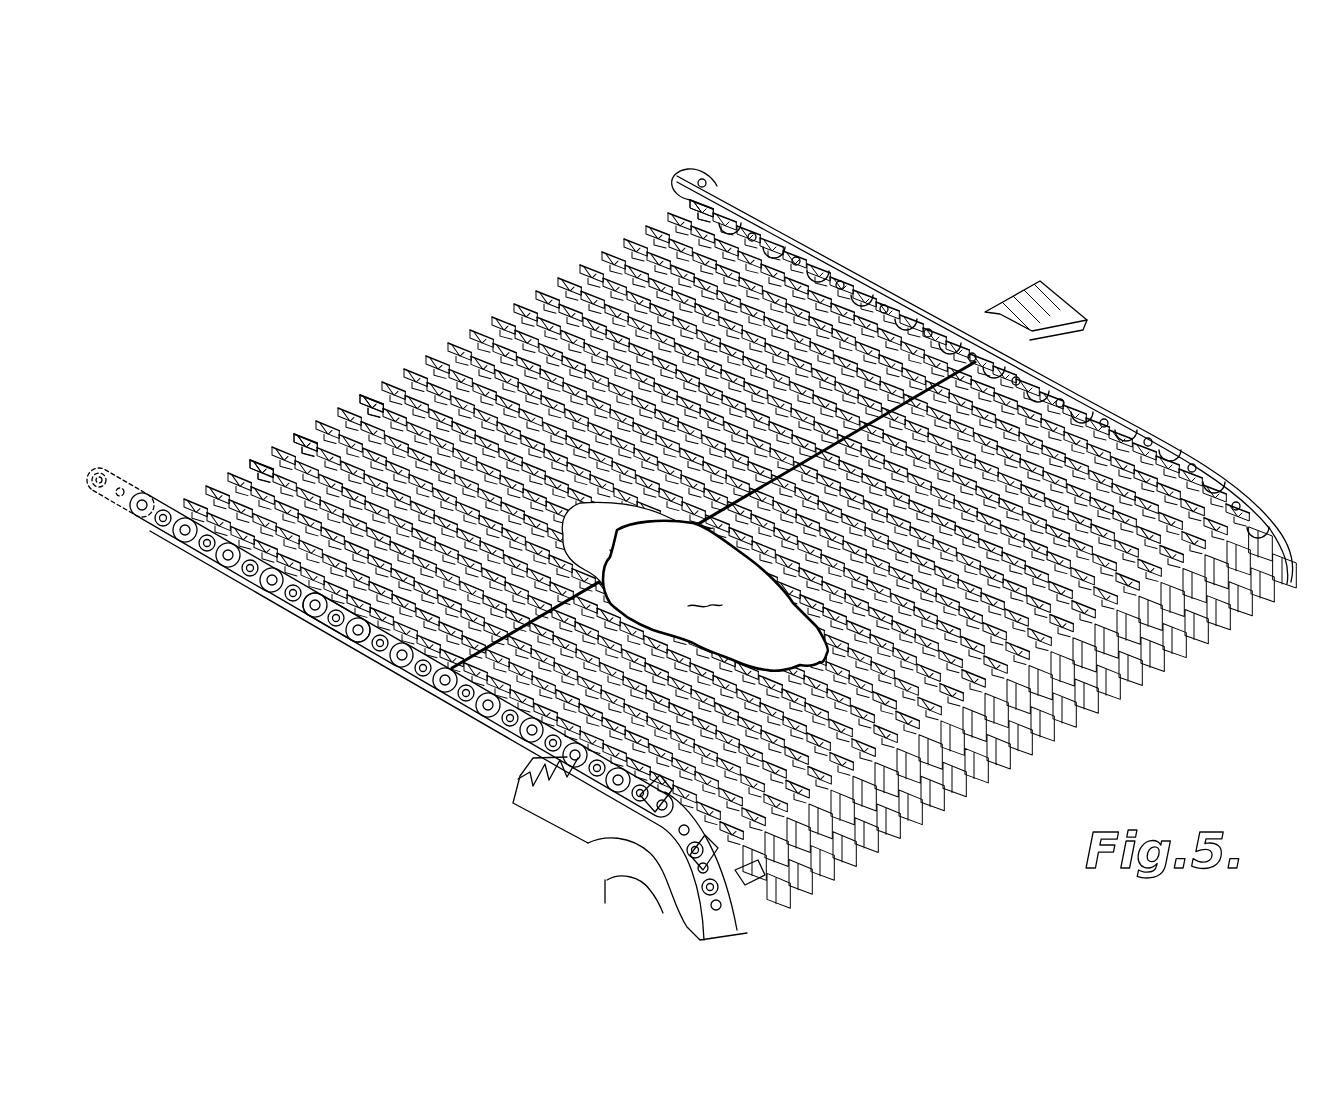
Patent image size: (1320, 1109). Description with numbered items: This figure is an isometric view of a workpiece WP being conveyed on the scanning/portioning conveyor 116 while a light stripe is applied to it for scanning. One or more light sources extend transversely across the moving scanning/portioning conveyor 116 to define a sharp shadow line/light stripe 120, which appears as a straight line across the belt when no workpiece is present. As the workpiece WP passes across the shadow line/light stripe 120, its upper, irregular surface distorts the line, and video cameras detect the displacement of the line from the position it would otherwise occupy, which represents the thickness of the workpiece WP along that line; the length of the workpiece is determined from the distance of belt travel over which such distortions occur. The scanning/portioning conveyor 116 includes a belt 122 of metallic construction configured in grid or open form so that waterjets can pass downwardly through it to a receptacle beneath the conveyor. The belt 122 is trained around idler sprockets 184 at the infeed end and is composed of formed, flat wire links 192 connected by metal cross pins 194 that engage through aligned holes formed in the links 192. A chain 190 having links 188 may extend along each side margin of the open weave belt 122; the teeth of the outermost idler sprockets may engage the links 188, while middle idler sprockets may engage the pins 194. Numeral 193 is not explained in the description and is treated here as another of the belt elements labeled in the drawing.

The scanning/portioning conveyor 116 is at (691, 536).
The shadow line/light stripe 120 is at (617, 525).
The belt 122 is at (740, 520).
The idler sprockets 184 is at (590, 836).
The links 188 is at (372, 618).
The chain 190 is at (690, 554).
The flat wire links 192 is at (702, 198).
The flight 193 is at (355, 388).
The cross pins 194 is at (315, 462).